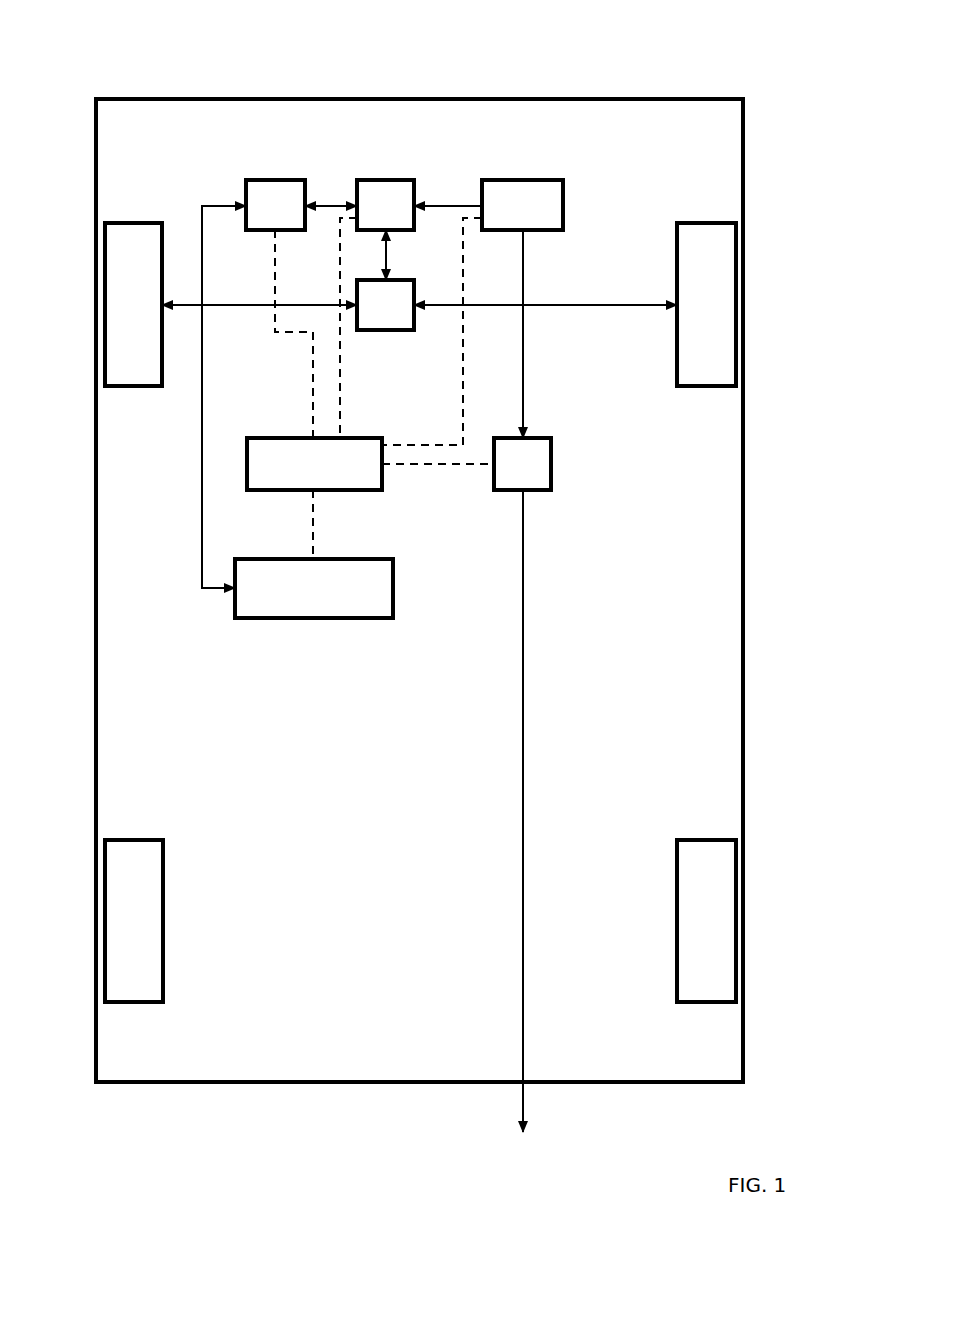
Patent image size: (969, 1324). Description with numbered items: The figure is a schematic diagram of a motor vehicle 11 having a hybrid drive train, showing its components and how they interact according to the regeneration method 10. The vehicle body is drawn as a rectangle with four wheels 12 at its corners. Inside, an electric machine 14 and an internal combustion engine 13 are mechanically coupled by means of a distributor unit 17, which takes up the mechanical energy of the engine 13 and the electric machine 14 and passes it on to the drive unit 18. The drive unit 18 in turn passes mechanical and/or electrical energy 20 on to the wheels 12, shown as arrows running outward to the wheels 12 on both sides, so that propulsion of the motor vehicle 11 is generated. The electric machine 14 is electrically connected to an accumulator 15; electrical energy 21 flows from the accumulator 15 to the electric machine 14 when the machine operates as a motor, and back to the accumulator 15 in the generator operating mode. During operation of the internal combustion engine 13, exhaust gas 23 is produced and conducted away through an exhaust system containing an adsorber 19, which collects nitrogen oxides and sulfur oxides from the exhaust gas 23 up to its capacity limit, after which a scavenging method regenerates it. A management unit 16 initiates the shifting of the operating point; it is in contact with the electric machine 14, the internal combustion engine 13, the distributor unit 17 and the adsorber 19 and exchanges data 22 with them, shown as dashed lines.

The regeneration method 10 is at (587, 77).
The motor vehicle 11 is at (743, 157).
The wheels 12 is at (114, 240).
The internal combustion engine 13 is at (548, 188).
The electric machine 14 is at (262, 193).
The accumulator 15 is at (278, 610).
The management unit 16 is at (363, 473).
The distributor unit 17 is at (378, 193).
The drive unit 18 is at (386, 310).
The adsorber 19 is at (540, 472).
The mechanical and/or electrical energy 20 is at (328, 203).
The electrical energy 21 is at (202, 497).
The data 22 is at (275, 292).
The exhaust gas 23 is at (525, 288).